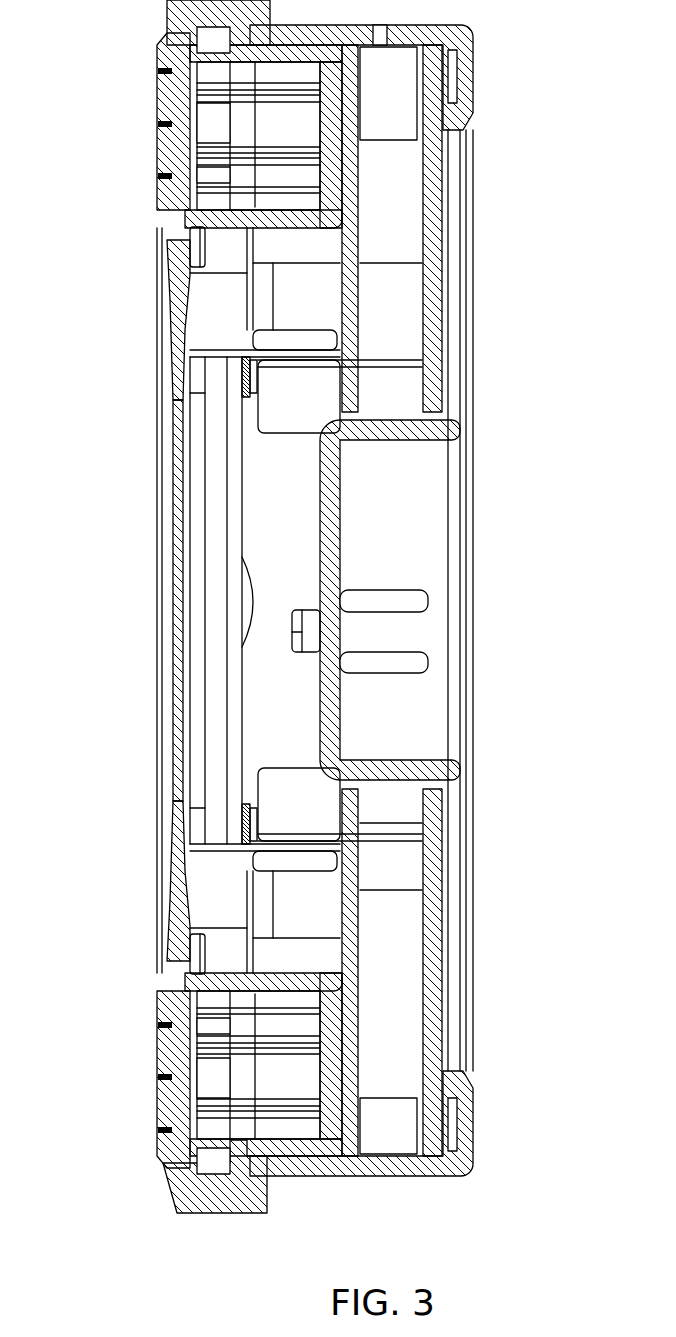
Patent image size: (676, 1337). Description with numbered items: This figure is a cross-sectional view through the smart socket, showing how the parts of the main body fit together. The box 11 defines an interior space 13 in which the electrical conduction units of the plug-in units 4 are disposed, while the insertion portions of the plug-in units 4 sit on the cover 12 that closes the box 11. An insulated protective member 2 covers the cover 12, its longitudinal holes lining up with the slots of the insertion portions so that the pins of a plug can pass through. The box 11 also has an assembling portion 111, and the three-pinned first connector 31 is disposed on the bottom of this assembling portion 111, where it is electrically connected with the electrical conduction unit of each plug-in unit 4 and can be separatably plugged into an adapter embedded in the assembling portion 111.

The protective member 2 is at (165, 1158).
The plug-in unit 4 is at (128, 130).
The box 11 is at (370, 1168).
The cover 12 is at (238, 1196).
The interior space 13 is at (292, 545).
The first connector 31 is at (420, 660).
The assembling portion 111 is at (398, 460).